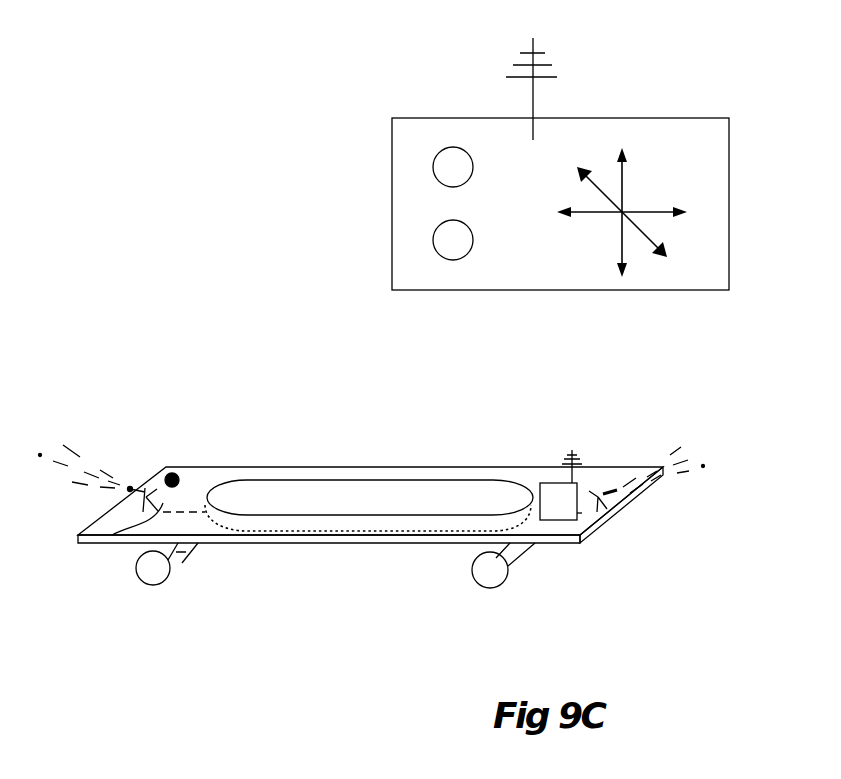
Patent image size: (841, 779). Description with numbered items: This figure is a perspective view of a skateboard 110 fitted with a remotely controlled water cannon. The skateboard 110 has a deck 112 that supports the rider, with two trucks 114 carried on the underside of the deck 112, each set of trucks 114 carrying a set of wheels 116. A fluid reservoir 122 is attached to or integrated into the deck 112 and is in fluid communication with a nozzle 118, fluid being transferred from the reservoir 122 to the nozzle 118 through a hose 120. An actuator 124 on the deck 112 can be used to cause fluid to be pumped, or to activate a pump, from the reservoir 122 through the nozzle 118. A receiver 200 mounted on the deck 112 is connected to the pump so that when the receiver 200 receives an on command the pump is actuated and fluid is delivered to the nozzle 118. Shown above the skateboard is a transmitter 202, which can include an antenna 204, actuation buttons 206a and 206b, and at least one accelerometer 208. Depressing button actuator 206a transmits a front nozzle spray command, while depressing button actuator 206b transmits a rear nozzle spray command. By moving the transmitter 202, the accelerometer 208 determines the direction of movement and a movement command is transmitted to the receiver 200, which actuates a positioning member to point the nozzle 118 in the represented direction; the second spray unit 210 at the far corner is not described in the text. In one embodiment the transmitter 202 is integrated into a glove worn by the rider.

The skateboard 110 is at (340, 440).
The deck 112 is at (202, 481).
The trucks 114 is at (193, 547).
The wheels 116 is at (492, 575).
The nozzle 118 is at (160, 489).
The hose 120 is at (112, 535).
The fluid reservoir 122 is at (470, 492).
The actuator 124 is at (172, 473).
The receiver 200 is at (558, 483).
The transmitter 202 is at (392, 175).
The antenna 204 is at (533, 98).
The actuation button 206a is at (452, 147).
The actuation button 206b is at (439, 226).
The accelerometer 208 is at (623, 183).
The sensor 210 is at (597, 497).